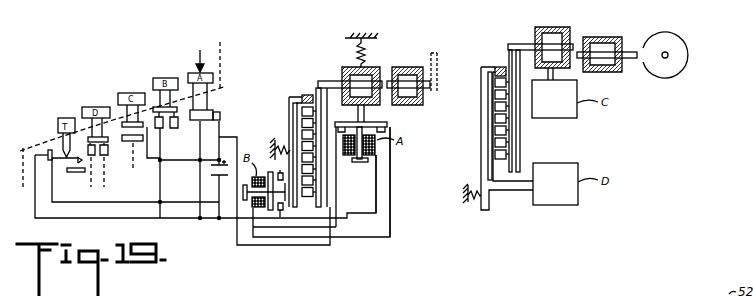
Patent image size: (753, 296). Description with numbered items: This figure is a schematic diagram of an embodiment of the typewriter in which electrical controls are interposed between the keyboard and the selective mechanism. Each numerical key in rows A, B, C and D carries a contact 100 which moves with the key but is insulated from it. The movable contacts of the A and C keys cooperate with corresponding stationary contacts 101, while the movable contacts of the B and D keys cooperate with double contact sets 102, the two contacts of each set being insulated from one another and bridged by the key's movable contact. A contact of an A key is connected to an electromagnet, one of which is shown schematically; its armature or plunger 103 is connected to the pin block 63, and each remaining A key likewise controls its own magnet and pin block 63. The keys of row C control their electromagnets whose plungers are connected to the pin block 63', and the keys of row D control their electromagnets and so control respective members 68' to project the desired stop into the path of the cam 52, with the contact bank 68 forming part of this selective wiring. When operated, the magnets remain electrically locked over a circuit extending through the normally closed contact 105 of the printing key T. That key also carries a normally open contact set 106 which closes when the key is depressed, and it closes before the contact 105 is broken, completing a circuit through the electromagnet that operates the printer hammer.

The normally closed contact 105 is at (49, 146).
The contact set 106 is at (76, 173).
The stationary contacts 101 is at (132, 143).
The double contact sets 102 is at (150, 108).
The contact 100 is at (206, 100).
The members 68 is at (298, 134).
The pin block 63 is at (377, 69).
The armature or plunger 103 is at (366, 115).
The members 68' is at (488, 130).
The pin block 63' is at (571, 43).
The cam 52 is at (668, 37).